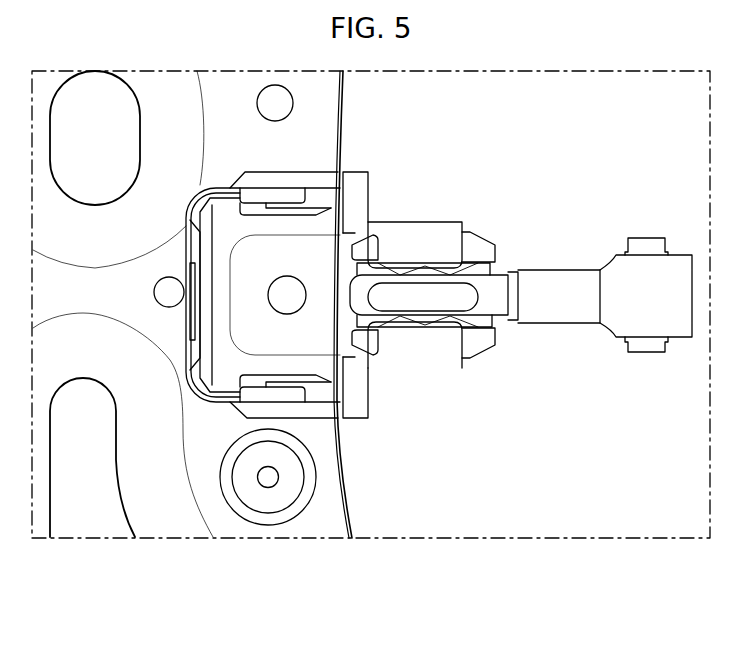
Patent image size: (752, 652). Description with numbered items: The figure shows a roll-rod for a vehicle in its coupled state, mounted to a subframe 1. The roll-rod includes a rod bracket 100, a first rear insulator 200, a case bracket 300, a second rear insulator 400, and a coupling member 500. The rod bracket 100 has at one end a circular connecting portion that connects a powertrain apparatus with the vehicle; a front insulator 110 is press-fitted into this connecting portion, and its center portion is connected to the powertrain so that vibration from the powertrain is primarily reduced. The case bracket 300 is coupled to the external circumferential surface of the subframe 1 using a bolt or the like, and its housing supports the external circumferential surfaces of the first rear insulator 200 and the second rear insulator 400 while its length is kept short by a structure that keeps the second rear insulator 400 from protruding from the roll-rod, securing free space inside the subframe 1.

The subframe 1 is at (203, 503).
The rod bracket 100 is at (545, 278).
The front insulator 110 is at (651, 245).
The first rear insulator 200 is at (478, 242).
The case bracket 300 is at (418, 227).
The second rear insulator 400 is at (367, 342).
The coupling member 500 is at (437, 303).